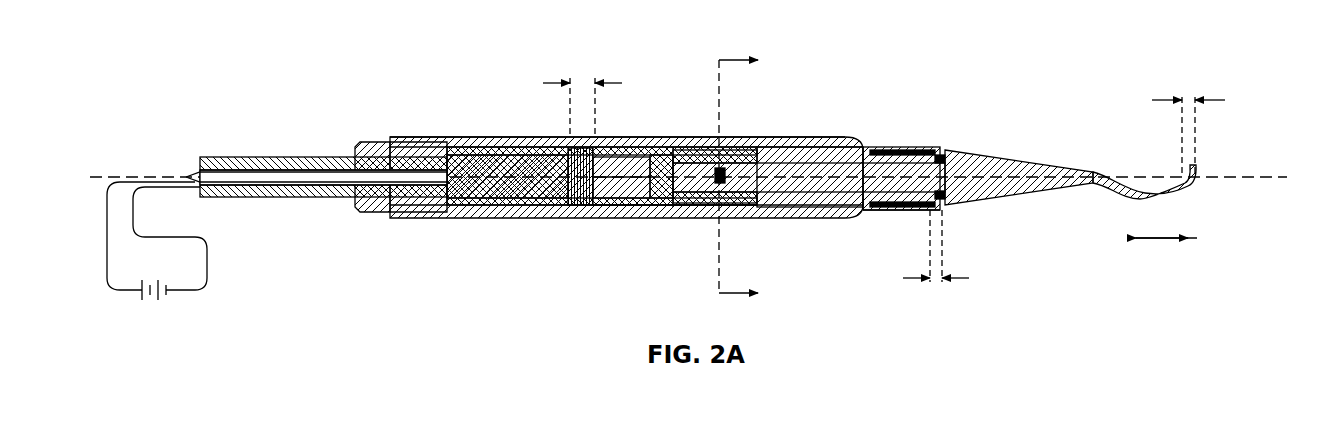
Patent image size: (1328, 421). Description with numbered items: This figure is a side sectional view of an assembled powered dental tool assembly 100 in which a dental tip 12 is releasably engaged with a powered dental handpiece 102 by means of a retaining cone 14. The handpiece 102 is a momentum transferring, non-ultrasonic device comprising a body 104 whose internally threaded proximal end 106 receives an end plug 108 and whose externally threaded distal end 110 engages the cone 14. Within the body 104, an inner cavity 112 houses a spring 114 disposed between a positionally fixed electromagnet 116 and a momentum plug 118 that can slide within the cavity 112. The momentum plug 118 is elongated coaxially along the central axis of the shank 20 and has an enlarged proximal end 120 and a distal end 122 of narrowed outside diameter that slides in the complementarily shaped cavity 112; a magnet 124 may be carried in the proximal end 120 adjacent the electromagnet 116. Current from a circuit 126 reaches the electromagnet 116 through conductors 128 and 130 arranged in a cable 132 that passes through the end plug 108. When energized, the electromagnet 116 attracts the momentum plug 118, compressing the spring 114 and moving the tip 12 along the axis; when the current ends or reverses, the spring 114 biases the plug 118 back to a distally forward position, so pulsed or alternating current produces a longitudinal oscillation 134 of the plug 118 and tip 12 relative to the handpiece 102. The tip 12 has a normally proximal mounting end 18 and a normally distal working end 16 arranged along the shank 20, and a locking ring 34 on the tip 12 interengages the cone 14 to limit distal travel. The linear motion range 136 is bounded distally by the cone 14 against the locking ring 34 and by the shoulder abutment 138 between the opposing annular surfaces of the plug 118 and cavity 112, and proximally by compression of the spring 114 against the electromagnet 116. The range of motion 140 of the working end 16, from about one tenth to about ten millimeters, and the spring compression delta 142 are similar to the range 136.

The dental tool assembly 100 is at (828, 72).
The powered dental handpiece 102 is at (466, 137).
The body 104 is at (560, 137).
The internally threaded proximal end 106 is at (400, 142).
The end plug 108 is at (376, 144).
The externally threaded distal end 110 is at (932, 208).
The inner cavity 112 is at (472, 206).
The spring 114 is at (582, 208).
The electromagnet 116 is at (525, 205).
The momentum plug 118 is at (668, 160).
The enlarged proximal end 120 is at (642, 216).
The distal end 122 is at (715, 207).
The magnet 124 is at (605, 158).
The circuit 126 is at (213, 259).
The conductor 128 is at (135, 203).
The conductor 130 is at (130, 292).
The cable 132 is at (300, 197).
The longitudinal oscillation 134 is at (1167, 241).
The linear motion range 136 is at (952, 278).
The shoulder abutment 138 is at (672, 208).
The range of motion 140 is at (1214, 100).
The spring compression delta 142 is at (552, 80).
The dental tip 12 is at (1036, 162).
The retaining cone 14 is at (916, 148).
The distal working end 16 is at (1190, 190).
The proximal mounting end 18 is at (722, 168).
The shank 20 is at (815, 165).
The locking ring 34 is at (941, 155).